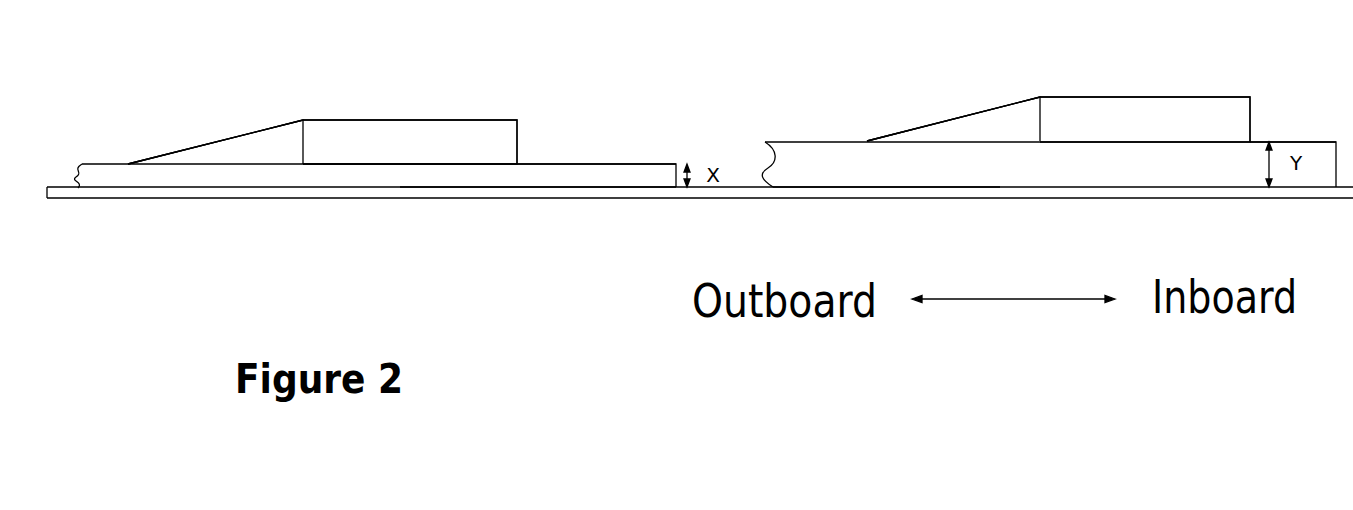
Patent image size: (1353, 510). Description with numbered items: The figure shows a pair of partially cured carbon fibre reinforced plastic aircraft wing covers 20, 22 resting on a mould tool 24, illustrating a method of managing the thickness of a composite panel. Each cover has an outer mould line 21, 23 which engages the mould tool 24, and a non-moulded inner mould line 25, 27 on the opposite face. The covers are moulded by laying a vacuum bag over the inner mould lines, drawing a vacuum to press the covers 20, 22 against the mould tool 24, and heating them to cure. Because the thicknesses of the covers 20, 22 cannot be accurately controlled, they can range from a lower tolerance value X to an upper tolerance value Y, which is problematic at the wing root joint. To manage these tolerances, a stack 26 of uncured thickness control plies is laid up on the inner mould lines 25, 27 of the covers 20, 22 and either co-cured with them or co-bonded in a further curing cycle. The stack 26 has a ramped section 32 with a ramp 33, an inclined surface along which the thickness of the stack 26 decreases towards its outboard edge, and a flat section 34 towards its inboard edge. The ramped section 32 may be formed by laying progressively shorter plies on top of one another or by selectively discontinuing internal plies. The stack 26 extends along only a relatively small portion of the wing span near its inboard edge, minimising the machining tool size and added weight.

The aircraft wing cover 20 is at (105, 173).
The outer mould line 21 is at (553, 188).
The aircraft wing cover 22 is at (845, 157).
The outer mould line 23 is at (838, 187).
The mould tool 24 is at (173, 193).
The inner mould line 25 is at (556, 163).
The stack of thickness control plies 26 is at (459, 95).
The inner mould line 27 is at (1298, 142).
The ramped section 32 is at (268, 147).
The ramp 33 is at (240, 133).
The flat section 34 is at (390, 145).